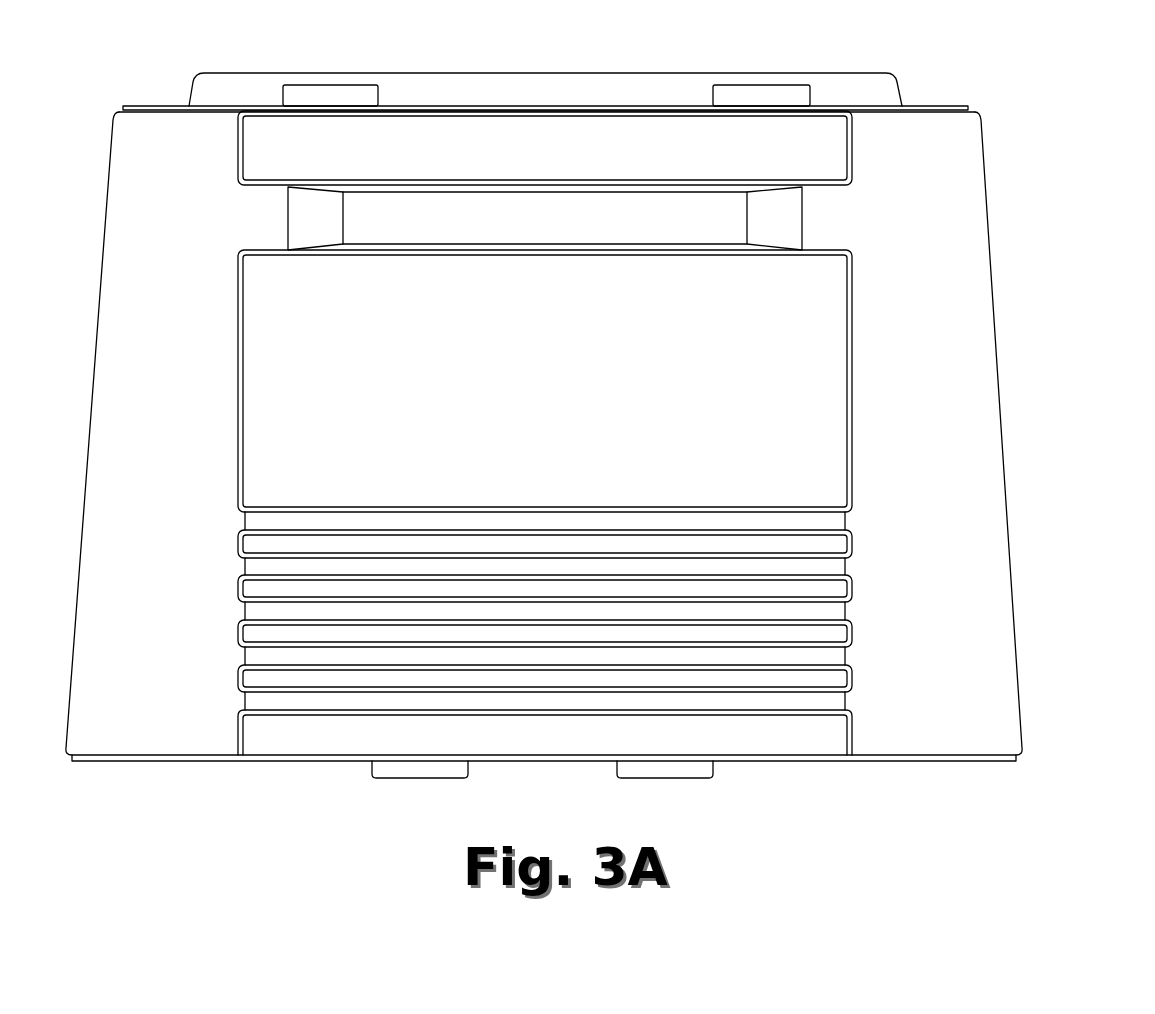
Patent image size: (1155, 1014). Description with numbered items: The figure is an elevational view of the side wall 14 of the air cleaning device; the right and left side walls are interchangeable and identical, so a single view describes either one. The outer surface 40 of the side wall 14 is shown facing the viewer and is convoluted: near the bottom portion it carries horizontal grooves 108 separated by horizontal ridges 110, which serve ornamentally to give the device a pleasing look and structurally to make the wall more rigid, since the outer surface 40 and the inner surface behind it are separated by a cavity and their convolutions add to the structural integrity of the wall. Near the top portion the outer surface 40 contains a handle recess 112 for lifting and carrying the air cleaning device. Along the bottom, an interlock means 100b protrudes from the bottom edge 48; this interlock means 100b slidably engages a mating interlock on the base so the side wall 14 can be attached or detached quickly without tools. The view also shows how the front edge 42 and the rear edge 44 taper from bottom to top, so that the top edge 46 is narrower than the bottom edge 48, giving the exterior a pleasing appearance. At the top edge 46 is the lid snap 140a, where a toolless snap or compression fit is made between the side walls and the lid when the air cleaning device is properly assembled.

The side wall 14 is at (1040, 276).
The top edge 46 is at (460, 73).
The lid snap 140a is at (752, 85).
The front edge 42 is at (96, 377).
The rear edge 44 is at (997, 380).
The bottom edge 48 is at (916, 762).
The interlock means 100b is at (712, 770).
The handle recess 112 is at (584, 231).
The outer surface 40 is at (713, 365).
The horizontal grooves 108 is at (848, 523).
The horizontal ridges 110 is at (842, 540).